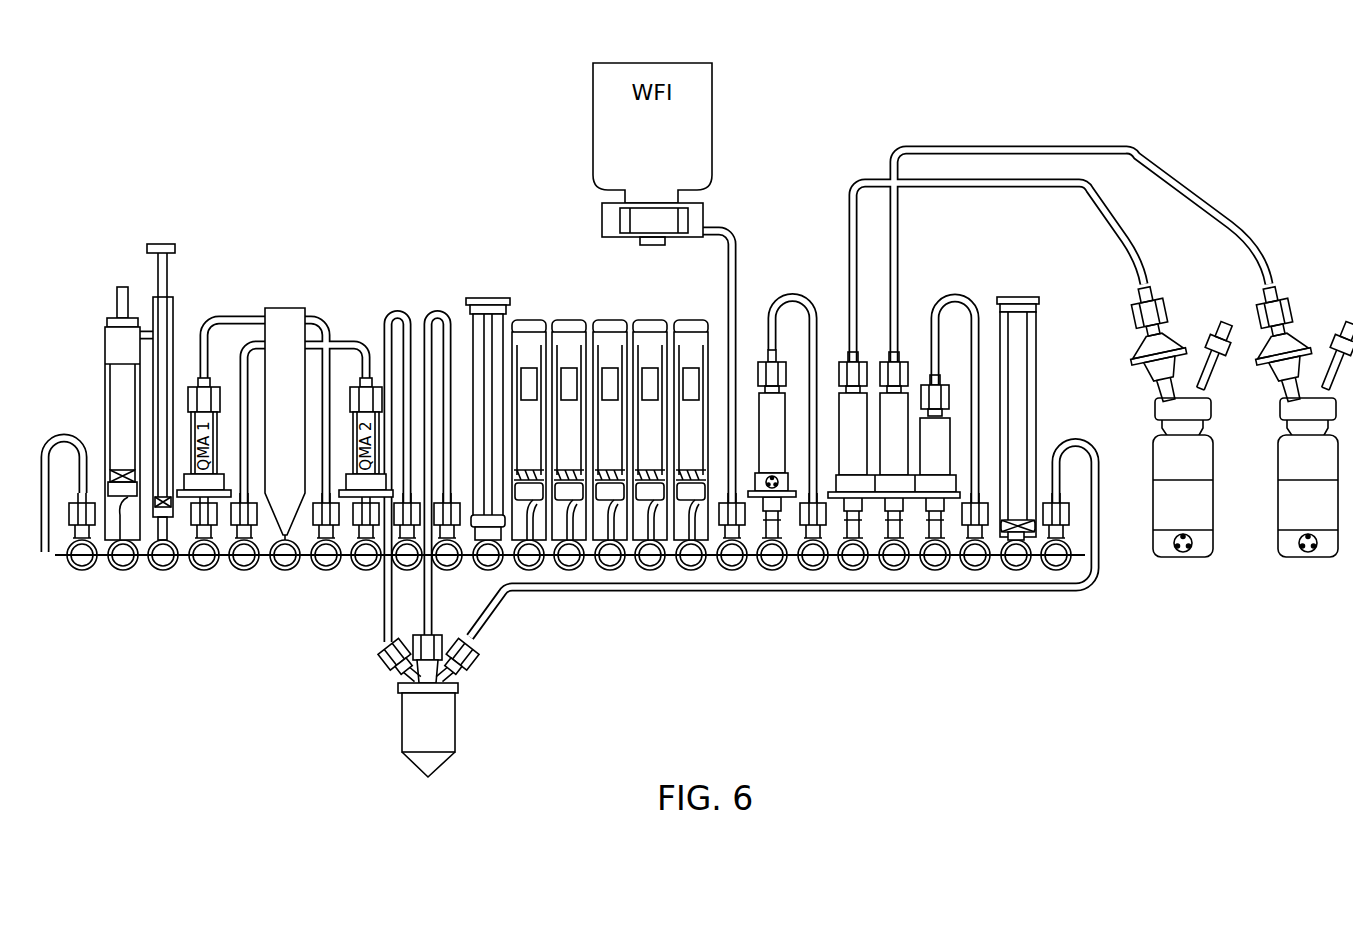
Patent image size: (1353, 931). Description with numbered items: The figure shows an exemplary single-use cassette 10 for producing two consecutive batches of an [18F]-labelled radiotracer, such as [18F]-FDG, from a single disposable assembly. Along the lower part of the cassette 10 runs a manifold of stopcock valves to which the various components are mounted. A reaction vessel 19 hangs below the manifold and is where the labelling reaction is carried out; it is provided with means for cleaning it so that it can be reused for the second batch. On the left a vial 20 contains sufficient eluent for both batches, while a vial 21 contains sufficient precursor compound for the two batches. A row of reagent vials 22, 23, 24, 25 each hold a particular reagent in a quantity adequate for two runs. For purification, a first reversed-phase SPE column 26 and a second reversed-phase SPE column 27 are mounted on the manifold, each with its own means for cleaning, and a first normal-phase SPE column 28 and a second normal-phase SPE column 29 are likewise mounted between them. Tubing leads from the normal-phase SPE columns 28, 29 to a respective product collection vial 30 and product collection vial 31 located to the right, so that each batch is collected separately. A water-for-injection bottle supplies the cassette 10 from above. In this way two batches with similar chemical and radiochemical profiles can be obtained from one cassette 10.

The single-use cassette 10 is at (236, 160).
The reaction vessel 19 is at (428, 706).
The vial containing eluent 20 is at (122, 413).
The vial containing precursor compound 21 is at (569, 430).
The reagent vial 22 is at (529, 430).
The reagent vial 23 is at (610, 430).
The reagent vial 24 is at (650, 430).
The reagent vial 25 is at (691, 430).
The first reversed-phase SPE column 26 is at (758, 362).
The second reversed-phase SPE column 27 is at (923, 390).
The first normal-phase SPE column 28 is at (843, 362).
The second normal-phase SPE column 29 is at (886, 362).
The product collection vial 30 is at (1199, 541).
The product collection vial 31 is at (1324, 541).